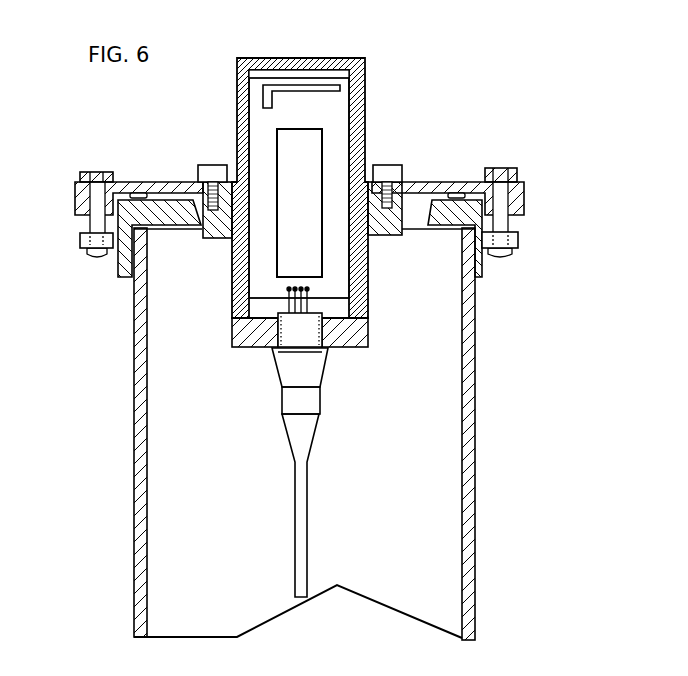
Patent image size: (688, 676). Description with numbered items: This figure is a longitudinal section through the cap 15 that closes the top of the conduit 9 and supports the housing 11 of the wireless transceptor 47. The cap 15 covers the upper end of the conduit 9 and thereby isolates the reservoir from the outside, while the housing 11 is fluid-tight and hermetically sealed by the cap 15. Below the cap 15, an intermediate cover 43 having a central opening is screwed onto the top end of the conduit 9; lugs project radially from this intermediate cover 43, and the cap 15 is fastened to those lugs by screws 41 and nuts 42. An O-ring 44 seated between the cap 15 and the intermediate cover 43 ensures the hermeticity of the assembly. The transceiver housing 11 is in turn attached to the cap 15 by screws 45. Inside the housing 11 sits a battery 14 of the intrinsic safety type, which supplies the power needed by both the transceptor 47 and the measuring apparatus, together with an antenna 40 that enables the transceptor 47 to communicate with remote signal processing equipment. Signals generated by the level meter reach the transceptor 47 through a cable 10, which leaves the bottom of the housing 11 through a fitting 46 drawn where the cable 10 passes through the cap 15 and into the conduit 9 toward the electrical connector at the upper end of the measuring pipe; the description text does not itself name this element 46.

The conduit 9 is at (478, 342).
The cable 10 is at (302, 493).
The transceiver housing 11 is at (368, 100).
The battery 14 is at (283, 245).
The cap 15 is at (406, 210).
The antenna 40 is at (283, 88).
The screws 41 is at (94, 175).
The nuts 42 is at (80, 243).
The intermediate cover 43 is at (450, 215).
The O-ring 44 is at (137, 196).
The screws 45 is at (217, 166).
The connector 46 is at (292, 367).
The wireless transceptor 47 is at (260, 127).